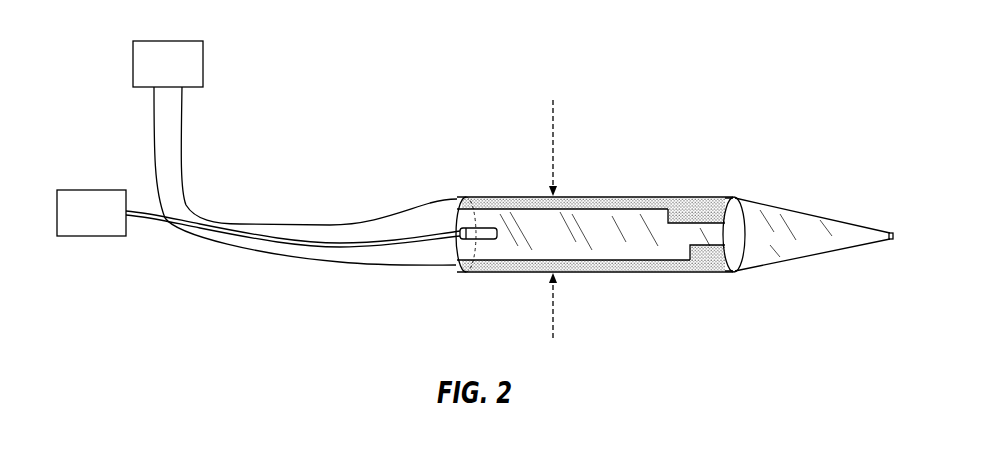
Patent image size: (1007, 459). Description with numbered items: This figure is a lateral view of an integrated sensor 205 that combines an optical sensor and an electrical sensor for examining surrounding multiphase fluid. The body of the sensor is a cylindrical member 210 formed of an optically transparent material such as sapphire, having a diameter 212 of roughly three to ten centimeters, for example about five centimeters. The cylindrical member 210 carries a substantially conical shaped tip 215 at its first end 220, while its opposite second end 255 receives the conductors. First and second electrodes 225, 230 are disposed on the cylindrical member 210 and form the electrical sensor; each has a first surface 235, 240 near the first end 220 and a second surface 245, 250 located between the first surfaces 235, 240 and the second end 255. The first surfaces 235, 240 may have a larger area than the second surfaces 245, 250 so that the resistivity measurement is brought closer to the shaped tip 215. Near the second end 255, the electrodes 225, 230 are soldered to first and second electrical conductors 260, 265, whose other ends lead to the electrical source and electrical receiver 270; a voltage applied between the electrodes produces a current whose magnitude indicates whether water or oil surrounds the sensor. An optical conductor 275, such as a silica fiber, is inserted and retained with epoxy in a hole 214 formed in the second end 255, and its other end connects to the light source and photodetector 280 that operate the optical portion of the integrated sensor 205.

The integrated sensor 205 is at (508, 190).
The cylindrical member 210 is at (626, 217).
The diameter 212 is at (553, 145).
The hole 214 is at (477, 232).
The shaped tip 215 is at (893, 236).
The first end 220 is at (847, 195).
The first electrode 225 is at (600, 197).
The second electrode 230 is at (600, 273).
The first surface of first electrode 235 is at (710, 194).
The first surface of second electrode 240 is at (703, 275).
The second surface of first electrode 245 is at (481, 195).
The second surface of second electrode 250 is at (481, 275).
The second end 255 is at (456, 185).
The first electrical conductor 260 is at (240, 223).
The second electrical conductor 265 is at (355, 266).
The electrical source and electrical receiver 270 is at (187, 73).
The optical conductor 275 is at (140, 219).
The light source and photodetector 280 is at (110, 223).